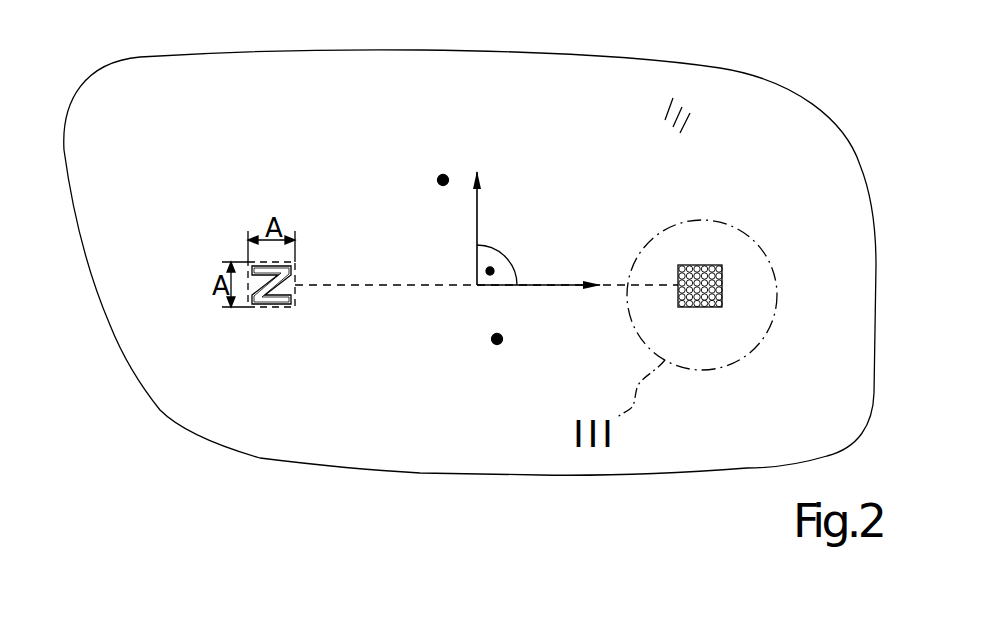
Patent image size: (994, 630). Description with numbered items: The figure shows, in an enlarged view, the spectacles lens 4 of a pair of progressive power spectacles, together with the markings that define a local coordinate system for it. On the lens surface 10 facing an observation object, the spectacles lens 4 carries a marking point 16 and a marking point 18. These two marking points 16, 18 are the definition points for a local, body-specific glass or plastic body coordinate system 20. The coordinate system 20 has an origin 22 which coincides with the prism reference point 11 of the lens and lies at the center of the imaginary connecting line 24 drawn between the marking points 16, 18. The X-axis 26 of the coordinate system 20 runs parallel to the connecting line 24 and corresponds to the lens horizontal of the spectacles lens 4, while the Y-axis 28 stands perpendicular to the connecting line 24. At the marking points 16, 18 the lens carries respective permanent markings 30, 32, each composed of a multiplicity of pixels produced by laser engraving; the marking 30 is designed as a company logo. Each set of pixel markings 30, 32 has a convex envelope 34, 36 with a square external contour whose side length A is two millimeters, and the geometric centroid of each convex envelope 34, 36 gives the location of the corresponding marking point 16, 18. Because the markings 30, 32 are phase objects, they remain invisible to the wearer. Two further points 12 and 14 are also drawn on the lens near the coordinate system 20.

The spectacles lens 4 is at (372, 443).
The lens surface 10 is at (673, 98).
The prism reference point 11 is at (472, 304).
The origin 22 is at (470, 287).
The second reference point 12 is at (497, 344).
The first reference point 14 is at (445, 174).
The marking point 16 is at (272, 287).
The marking point 18 is at (718, 311).
The local glass or plastic body coordinate system 20 is at (552, 226).
The imaginary connecting line 24 is at (354, 285).
The X-axis 26 is at (567, 286).
The Y-axis 28 is at (478, 200).
The marking 30 is at (240, 264).
The marking 32 is at (704, 262).
The convex envelope 34 is at (270, 307).
The convex envelope 36 is at (700, 307).